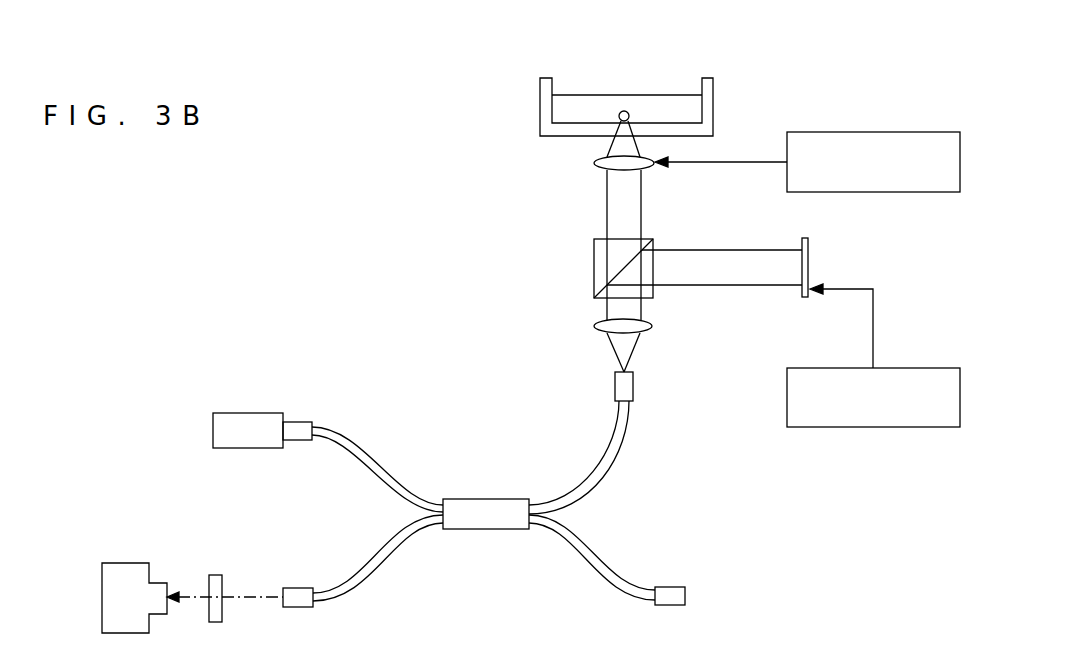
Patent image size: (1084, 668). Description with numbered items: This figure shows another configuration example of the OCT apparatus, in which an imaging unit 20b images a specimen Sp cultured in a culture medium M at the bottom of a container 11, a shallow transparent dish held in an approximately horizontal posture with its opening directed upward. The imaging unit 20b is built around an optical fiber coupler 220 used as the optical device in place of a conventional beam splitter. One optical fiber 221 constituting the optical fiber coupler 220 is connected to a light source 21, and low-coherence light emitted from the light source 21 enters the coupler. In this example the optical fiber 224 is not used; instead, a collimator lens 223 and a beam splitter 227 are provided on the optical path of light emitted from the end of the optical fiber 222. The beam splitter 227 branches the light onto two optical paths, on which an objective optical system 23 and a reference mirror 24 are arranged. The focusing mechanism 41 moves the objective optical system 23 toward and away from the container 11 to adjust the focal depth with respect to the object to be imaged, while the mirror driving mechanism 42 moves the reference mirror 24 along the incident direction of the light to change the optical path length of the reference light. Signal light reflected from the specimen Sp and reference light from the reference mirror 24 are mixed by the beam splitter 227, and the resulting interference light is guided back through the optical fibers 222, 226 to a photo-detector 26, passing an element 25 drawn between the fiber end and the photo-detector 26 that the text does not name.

The container 11 is at (541, 106).
The culture medium M is at (587, 94).
The specimen Sp is at (626, 111).
The objective optical system 23 is at (596, 164).
The focusing mechanism 41 is at (842, 132).
The beam splitter 227 is at (593, 270).
The reference mirror 24 is at (808, 245).
The mirror driving mechanism 42 is at (905, 368).
The collimator lens 223 is at (653, 329).
The imaging unit 20b is at (371, 292).
The light source 21 is at (248, 412).
The optical fiber 221 is at (362, 440).
The optical fiber coupler 220 is at (490, 499).
The optical fiber 222 is at (621, 455).
The optical fiber 224 is at (602, 563).
The optical fiber 226 is at (399, 567).
The filter 25 is at (217, 575).
The photo-detector 26 is at (121, 562).